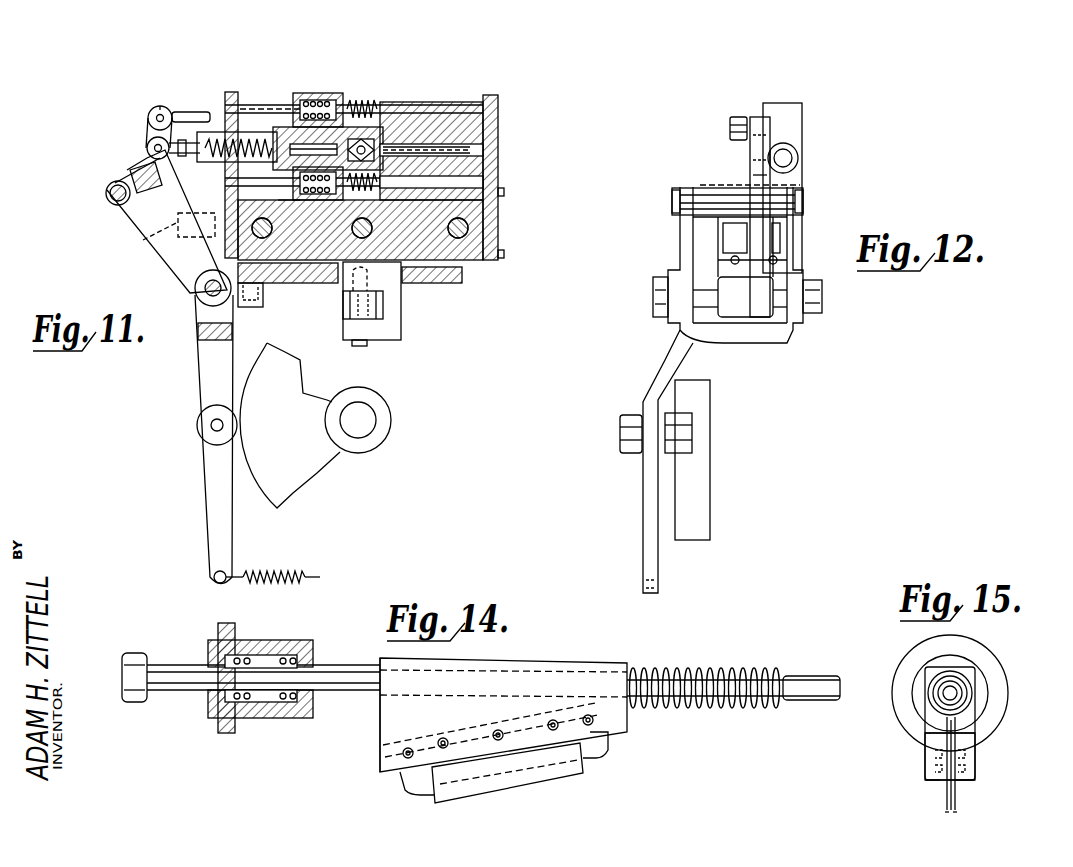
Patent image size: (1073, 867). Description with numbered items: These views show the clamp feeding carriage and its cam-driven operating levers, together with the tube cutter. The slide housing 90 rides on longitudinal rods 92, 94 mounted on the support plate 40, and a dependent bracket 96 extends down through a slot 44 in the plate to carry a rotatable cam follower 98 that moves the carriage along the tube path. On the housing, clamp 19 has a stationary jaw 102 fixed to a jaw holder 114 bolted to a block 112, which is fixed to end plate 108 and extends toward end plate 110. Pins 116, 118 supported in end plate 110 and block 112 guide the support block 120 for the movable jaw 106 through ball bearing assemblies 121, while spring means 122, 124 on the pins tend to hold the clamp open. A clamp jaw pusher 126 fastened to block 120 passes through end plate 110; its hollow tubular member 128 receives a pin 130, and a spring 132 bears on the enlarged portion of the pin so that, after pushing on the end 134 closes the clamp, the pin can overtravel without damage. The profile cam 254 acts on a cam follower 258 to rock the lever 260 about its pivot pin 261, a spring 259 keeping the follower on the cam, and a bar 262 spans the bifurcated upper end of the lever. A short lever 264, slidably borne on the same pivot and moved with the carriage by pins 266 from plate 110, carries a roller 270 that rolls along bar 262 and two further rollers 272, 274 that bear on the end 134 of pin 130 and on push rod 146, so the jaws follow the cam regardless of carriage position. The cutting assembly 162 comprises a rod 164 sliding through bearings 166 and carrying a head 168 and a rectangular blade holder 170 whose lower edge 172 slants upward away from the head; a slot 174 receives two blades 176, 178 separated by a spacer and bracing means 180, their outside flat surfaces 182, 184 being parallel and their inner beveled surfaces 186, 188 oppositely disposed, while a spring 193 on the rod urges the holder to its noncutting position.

In FIG. 11, the clamp 19 is at (362, 146).
In FIG. 11, the support plate 40 is at (465, 283).
In FIG. 11, the slot 44 is at (400, 290).
In FIG. 11, the slide housing 90 is at (545, 262).
In FIG. 12, the slide housing 90 is at (800, 262).
In FIG. 11, the longitudinal rod 92 is at (466, 230).
In FIG. 11, the longitudinal rod 94 is at (262, 240).
In FIG. 11, the dependent bracket 96 is at (362, 346).
In FIG. 11, the cam follower 98 is at (343, 310).
In FIG. 11, the stationary jaw 102 is at (366, 142).
In FIG. 11, the movable jaw 106 is at (354, 140).
In FIG. 11, the end plate 108 is at (498, 122).
In FIG. 11, the end plate 110 is at (232, 92).
In FIG. 12, the end plate 110 is at (802, 112).
In FIG. 11, the block 112 is at (462, 102).
In FIG. 11, the jaw holder 114 is at (380, 145).
In FIG. 11, the pin 116 is at (265, 105).
In FIG. 11, the pin 118 is at (288, 200).
In FIG. 11, the support block 120 is at (300, 98).
In FIG. 11, the ball bearing assembly 121 is at (320, 100).
In FIG. 11, the spring means 122 is at (362, 100).
In FIG. 11, the spring means 124 is at (390, 188).
In FIG. 11, the clamp jaw pusher 126 is at (222, 68).
In FIG. 11, the hollow tubular member 128 is at (150, 112).
In FIG. 11, the pin 130 is at (147, 149).
In FIG. 11, the spring 132 is at (250, 132).
In FIG. 11, the end of pin 134 is at (175, 155).
In FIG. 11, the push rod 146 is at (192, 112).
In FIG. 14, the cutting assembly 162 is at (583, 646).
In FIG. 15, the cutting assembly 162 is at (968, 665).
In FIG. 11, the rod 164 is at (172, 266).
In FIG. 14, the rod 164 is at (338, 665).
In FIG. 15, the rod 164 is at (970, 680).
In FIG. 12, the bearing 166 is at (720, 240).
In FIG. 14, the bearing 166 is at (272, 642).
In FIG. 14, the head 168 is at (137, 653).
In FIG. 14, the blade holder 170 is at (380, 722).
In FIG. 14, the lower edge 172 is at (612, 738).
In FIG. 15, the slot 174 is at (935, 764).
In FIG. 15, the blade 176 is at (975, 779).
In FIG. 14, the blade 178 is at (583, 778).
In FIG. 15, the blade 178 is at (948, 801).
In FIG. 14, the spacer and blade bracing means 180 is at (595, 760).
In FIG. 15, the spacer and blade bracing means 180 is at (965, 761).
In FIG. 15, the outside flat surface 182 is at (957, 801).
In FIG. 15, the outside flat surface 184 is at (935, 783).
In FIG. 15, the beveled surface 186 is at (956, 815).
In FIG. 15, the beveled surface 188 is at (945, 815).
In FIG. 14, the spring 193 is at (713, 670).
In FIG. 15, the spring 193 is at (972, 698).
In FIG. 11, the profile cam 254 is at (320, 473).
In FIG. 12, the profile cam 254 is at (710, 500).
In FIG. 11, the cam follower 258 is at (197, 426).
In FIG. 12, the cam follower 258 is at (692, 425).
In FIG. 11, the spring 259 is at (282, 575).
In FIG. 11, the lever 260 is at (198, 368).
In FIG. 12, the lever 260 is at (643, 497).
In FIG. 11, the pivot pin 261 is at (205, 288).
In FIG. 12, the pivot pin 261 is at (653, 295).
In FIG. 12, the bar 262 is at (700, 188).
In FIG. 12, the short lever 264 is at (760, 117).
In FIG. 11, the pins 266 is at (143, 240).
In FIG. 11, the roller 270 is at (108, 196).
In FIG. 12, the roller 270 is at (802, 183).
In FIG. 11, the roller 272 is at (130, 175).
In FIG. 12, the roller 272 is at (796, 152).
In FIG. 11, the roller 274 is at (160, 106).
In FIG. 12, the roller 274 is at (730, 128).